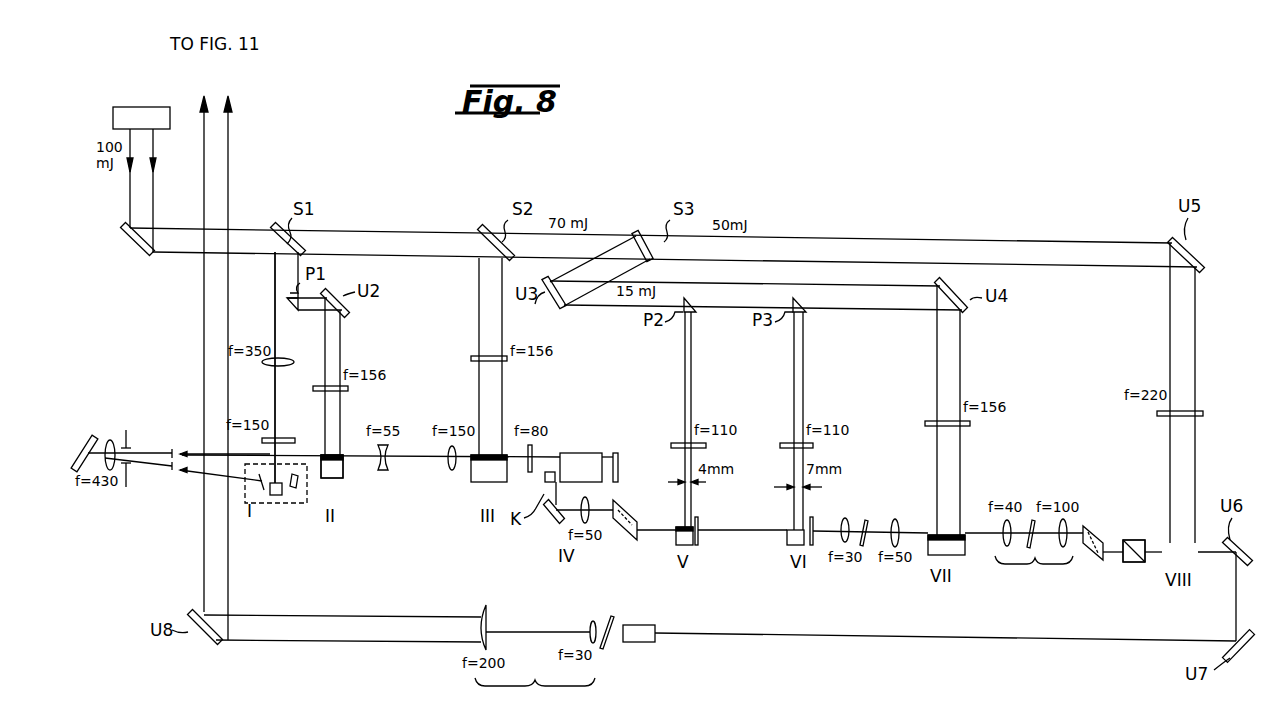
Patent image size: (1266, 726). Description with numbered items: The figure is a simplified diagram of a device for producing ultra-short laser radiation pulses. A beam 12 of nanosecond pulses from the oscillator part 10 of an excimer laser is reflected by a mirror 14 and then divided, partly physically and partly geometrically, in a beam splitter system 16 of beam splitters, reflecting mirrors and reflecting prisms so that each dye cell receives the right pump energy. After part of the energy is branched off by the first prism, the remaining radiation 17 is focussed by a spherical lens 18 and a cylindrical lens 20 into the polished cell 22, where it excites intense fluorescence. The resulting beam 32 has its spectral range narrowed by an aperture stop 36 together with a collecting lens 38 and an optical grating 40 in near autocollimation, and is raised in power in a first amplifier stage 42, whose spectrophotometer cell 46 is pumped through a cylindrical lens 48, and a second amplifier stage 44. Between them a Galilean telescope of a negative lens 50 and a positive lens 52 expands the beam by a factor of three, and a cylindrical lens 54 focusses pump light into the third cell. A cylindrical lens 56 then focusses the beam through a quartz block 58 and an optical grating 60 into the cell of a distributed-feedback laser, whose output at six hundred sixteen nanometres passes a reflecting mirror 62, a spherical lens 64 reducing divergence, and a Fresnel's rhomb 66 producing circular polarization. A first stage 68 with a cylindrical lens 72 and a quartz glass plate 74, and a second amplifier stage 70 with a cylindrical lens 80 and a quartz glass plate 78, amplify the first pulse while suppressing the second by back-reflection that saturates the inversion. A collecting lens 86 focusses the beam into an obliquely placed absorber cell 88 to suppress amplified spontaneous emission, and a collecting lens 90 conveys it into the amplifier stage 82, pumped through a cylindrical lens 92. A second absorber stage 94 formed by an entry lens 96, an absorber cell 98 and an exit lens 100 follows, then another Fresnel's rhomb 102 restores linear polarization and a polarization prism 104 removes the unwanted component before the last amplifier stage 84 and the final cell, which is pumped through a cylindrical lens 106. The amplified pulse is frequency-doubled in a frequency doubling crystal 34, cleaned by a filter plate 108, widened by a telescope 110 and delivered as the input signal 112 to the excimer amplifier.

The oscillator part 10 is at (147, 111).
The beam 12 is at (153, 192).
The mirror 14 is at (138, 252).
The beam splitter system 16 is at (698, 156).
The remaining radiation 17 is at (275, 326).
The spherical lens 18 is at (271, 366).
The cylindrical lens 20 is at (290, 438).
The cell 22 is at (278, 496).
The beam 32 is at (175, 472).
The frequency doubling crystal 34 is at (644, 625).
The aperture stop 36 is at (130, 434).
The collecting lens 38 is at (110, 438).
The optical grating 40 is at (88, 438).
The first amplifier stage 42 is at (336, 486).
The second amplifier stage 44 is at (470, 490).
The spectrophotometer cell 46 is at (344, 468).
The cylindrical lens 48 is at (334, 392).
The negative lens 50 is at (385, 468).
The positive lens 52 is at (451, 468).
The cylindrical lens 54 is at (472, 358).
The cylindrical lens 56 is at (528, 470).
The quartz block 58 is at (580, 453).
The optical grating 60 is at (618, 470).
The reflecting mirror 62 is at (550, 524).
The spherical lens 64 is at (591, 504).
The Fresnel's rhomb 66 is at (638, 519).
The first stage 68 is at (695, 549).
The second amplifier stage 70 is at (786, 550).
The cylindrical lens 72 is at (672, 442).
The quartz glass plate 74 is at (698, 520).
The quartz glass plate 78 is at (812, 550).
The cylindrical lens 80 is at (783, 442).
The amplifier stage 82 is at (956, 560).
The last amplifier stage 84 is at (1134, 570).
The collecting lens 86 is at (846, 516).
The absorber cell 88 is at (865, 517).
The collecting lens 90 is at (898, 519).
The cylindrical lens 92 is at (928, 421).
The second absorber stage 94 is at (1034, 575).
The entry lens 96 is at (1003, 528).
The absorber cell 98 is at (1030, 520).
The exit lens 100 is at (1067, 524).
The Fresnel's rhomb 102 is at (1092, 560).
The polarization prism 104 is at (1146, 518).
The cylindrical lens 106 is at (1199, 410).
The filter plate 108 is at (611, 642).
The telescope 110 is at (538, 702).
The input signal 112 is at (238, 96).